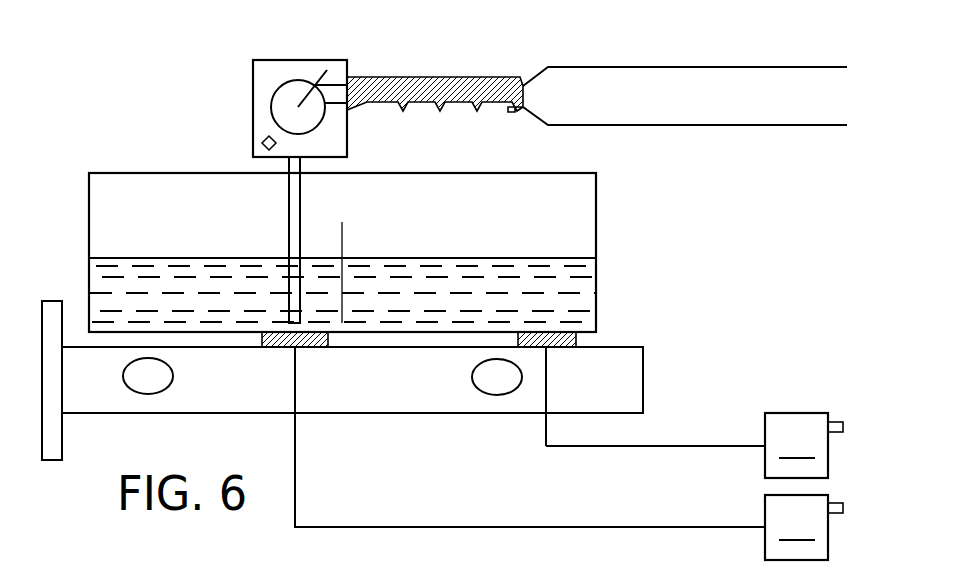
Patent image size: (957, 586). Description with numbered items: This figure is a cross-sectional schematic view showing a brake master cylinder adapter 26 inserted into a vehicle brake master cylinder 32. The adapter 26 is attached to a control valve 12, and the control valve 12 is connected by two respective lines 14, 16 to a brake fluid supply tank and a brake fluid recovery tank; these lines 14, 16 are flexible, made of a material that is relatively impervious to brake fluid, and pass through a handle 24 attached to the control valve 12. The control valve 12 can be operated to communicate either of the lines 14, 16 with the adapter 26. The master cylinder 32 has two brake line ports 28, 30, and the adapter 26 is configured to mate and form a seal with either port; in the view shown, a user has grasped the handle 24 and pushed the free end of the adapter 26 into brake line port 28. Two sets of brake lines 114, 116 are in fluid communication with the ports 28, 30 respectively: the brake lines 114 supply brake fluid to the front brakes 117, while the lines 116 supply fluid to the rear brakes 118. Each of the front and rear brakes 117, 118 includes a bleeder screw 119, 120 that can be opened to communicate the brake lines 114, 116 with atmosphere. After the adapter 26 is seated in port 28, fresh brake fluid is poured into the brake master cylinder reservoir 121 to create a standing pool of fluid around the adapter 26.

The control valve 12 is at (273, 67).
The line 14 is at (650, 66).
The line 16 is at (648, 123).
The handle 24 is at (410, 77).
The brake master cylinder adapter 26 is at (300, 200).
The brake line port 28 is at (316, 348).
The brake line port 30 is at (563, 348).
The brake master cylinder 32 is at (645, 188).
The brake lines 114 is at (627, 526).
The brake lines 116 is at (680, 445).
The front brakes 117 is at (796, 527).
The rear brakes 118 is at (796, 445).
The bleeder screw 119 is at (845, 503).
The bleeder screw 120 is at (845, 420).
The brake master cylinder reservoir 121 is at (88, 218).